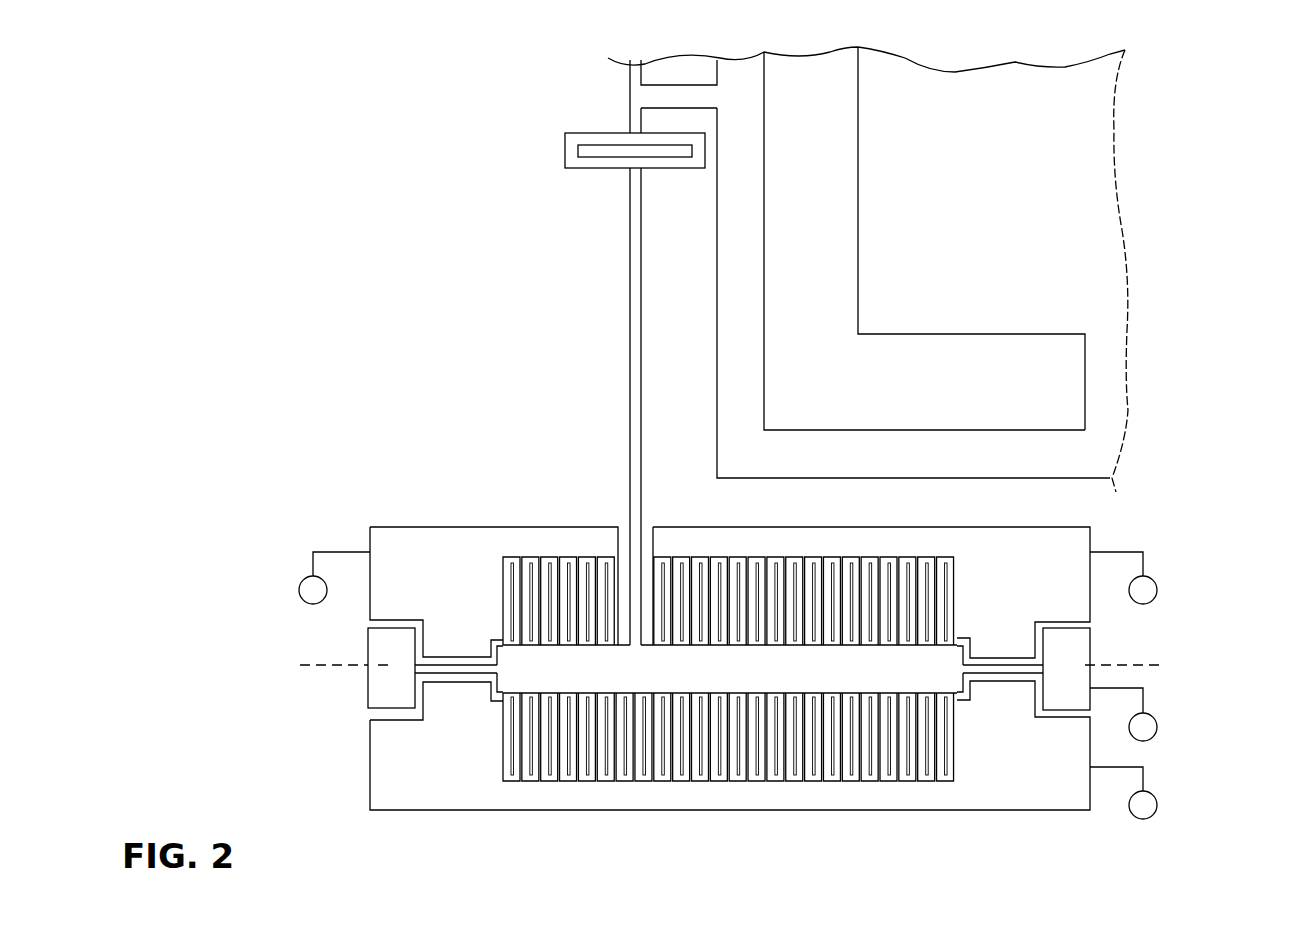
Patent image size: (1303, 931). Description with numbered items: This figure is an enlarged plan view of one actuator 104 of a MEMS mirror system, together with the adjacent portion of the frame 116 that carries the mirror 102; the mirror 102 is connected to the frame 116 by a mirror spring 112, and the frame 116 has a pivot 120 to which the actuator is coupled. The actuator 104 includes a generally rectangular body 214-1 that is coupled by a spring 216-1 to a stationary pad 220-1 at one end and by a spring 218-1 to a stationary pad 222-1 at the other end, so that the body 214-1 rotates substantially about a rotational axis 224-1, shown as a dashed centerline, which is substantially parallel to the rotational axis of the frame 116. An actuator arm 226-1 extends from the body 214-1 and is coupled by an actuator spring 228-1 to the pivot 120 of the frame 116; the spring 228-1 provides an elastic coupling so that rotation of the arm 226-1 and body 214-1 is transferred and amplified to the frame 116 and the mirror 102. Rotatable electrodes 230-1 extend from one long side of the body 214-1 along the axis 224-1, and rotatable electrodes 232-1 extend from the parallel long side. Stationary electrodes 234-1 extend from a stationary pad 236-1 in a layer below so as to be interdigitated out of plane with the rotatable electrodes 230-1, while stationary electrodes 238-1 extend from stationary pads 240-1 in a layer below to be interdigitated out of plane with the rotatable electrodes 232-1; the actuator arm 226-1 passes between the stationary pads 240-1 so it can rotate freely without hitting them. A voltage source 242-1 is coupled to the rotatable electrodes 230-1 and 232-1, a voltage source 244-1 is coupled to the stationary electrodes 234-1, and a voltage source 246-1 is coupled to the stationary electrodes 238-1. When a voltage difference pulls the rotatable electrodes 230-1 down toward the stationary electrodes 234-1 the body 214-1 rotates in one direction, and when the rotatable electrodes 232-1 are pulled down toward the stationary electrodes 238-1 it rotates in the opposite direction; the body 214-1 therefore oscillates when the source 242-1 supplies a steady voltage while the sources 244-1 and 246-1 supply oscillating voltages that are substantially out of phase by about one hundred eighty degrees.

The mirror 102 is at (868, 269).
The actuator 104 is at (272, 154).
The mirror spring 112 is at (1088, 378).
The frame 116 is at (765, 350).
The pivot 120 is at (680, 90).
The body 214-1 is at (730, 669).
The spring 216-1 is at (461, 668).
The spring 218-1 is at (999, 668).
The stationary pad 220-1 is at (390, 683).
The stationary pad 222-1 is at (1062, 648).
The rotational axis 224-1 is at (1165, 688).
The actuator arm 226-1 is at (630, 330).
The actuator spring 228-1 is at (565, 150).
The rotatable electrodes 230-1 is at (588, 782).
The rotatable electrodes 232-1 is at (528, 563).
The stationary electrodes 234-1 is at (675, 782).
The stationary pad 236-1 is at (730, 745).
The stationary electrodes 238-1 is at (578, 563).
The stationary pads 240-1 is at (1115, 540).
The voltage source 242-1 is at (1158, 732).
The voltage source 244-1 is at (1158, 810).
The voltage source 246-1 is at (734, 602).